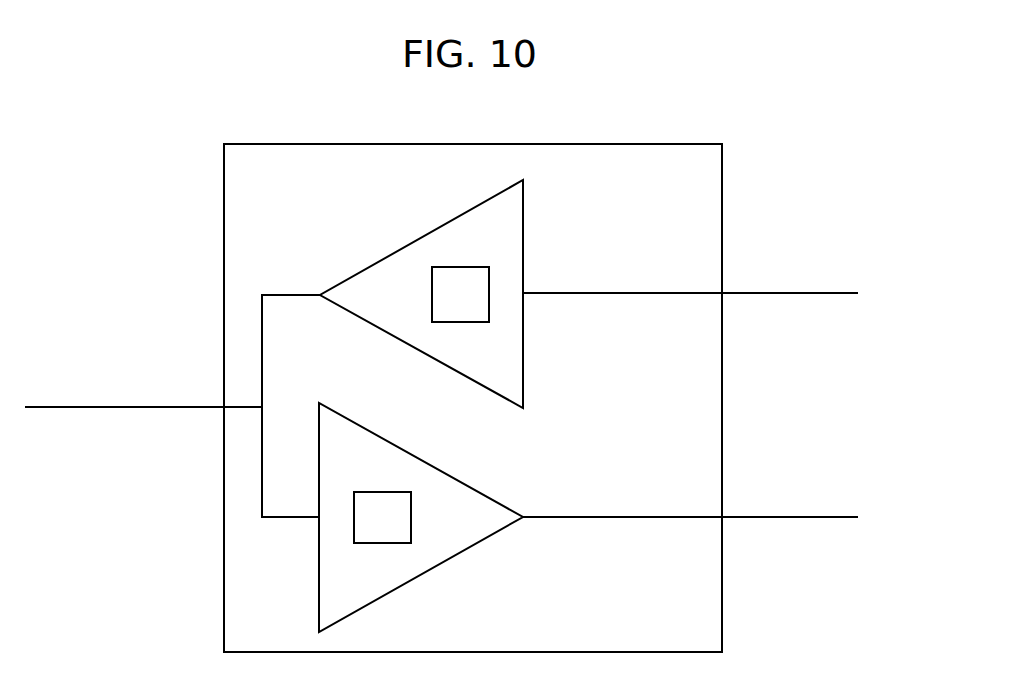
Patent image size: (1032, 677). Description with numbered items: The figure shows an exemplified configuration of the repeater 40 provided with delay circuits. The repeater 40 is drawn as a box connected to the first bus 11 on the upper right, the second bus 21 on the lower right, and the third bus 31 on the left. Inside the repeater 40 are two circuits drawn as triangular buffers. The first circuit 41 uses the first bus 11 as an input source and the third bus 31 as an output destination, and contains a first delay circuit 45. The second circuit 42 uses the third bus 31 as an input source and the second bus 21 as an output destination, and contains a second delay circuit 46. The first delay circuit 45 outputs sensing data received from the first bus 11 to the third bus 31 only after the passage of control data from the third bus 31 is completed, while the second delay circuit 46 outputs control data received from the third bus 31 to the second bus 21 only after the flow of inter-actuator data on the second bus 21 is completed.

The repeater 40 is at (473, 398).
The first circuit 41 is at (525, 232).
The second circuit 42 is at (462, 480).
The first delay circuit 45 is at (490, 295).
The second delay circuit 46 is at (411, 517).
The first bus 11 is at (750, 294).
The second bus 21 is at (750, 518).
The third bus 31 is at (65, 408).